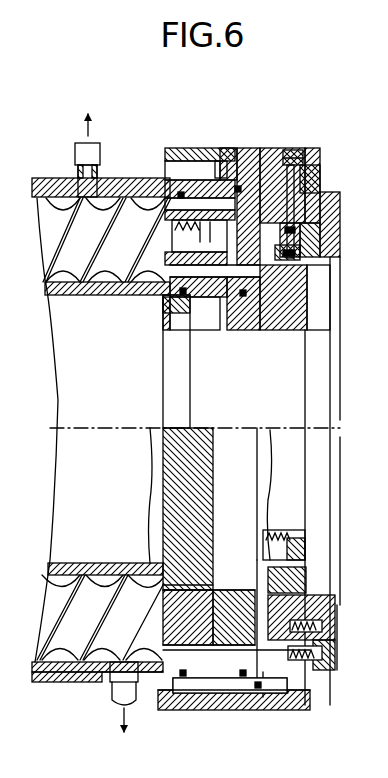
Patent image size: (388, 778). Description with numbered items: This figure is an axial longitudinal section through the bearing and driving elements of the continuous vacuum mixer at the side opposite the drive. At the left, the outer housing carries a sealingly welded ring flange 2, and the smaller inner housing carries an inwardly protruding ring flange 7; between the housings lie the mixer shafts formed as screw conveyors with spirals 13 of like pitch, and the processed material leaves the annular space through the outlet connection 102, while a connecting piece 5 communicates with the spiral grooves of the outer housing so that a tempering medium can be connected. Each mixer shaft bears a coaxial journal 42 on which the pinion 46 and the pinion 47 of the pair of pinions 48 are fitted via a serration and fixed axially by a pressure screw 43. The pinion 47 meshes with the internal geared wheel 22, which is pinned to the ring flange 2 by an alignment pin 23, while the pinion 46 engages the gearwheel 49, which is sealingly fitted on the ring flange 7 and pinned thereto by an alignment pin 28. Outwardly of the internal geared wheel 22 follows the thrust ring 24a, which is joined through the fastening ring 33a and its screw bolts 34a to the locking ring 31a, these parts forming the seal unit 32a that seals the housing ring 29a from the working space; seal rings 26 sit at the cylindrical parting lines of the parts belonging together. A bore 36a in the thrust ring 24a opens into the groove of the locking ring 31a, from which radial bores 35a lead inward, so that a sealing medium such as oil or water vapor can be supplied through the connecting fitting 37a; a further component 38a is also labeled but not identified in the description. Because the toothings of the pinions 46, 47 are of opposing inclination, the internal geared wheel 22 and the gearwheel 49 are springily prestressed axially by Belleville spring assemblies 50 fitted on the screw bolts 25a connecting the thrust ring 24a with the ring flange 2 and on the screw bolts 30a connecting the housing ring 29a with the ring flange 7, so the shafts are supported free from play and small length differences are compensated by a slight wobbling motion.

The ring flange 2 is at (173, 150).
The connecting piece 5 is at (82, 155).
The ring flange 7 is at (176, 333).
The spirals 13 is at (52, 190).
The internal geared wheel 22 is at (222, 185).
The alignment pin 23 is at (183, 168).
The thrust ring 24a is at (292, 150).
The screw bolts 25a is at (255, 692).
The seal rings 26 is at (300, 268).
The alignment pin 28 is at (163, 307).
The housing ring 29a is at (290, 320).
The screw bolts 30a is at (298, 552).
The locking ring 31a is at (315, 233).
The seal unit 32a is at (300, 273).
The fastening ring 33a is at (330, 205).
The screw bolts 34a is at (333, 650).
The radial bores 35a is at (305, 253).
The bore 36a is at (313, 182).
The connecting fitting 37a is at (295, 153).
The valve block 38a is at (333, 622).
The coaxial journal 42 is at (175, 193).
The pressure screw 43 is at (264, 250).
The pinion 46 is at (207, 213).
The pinion 47 is at (238, 182).
The pair of pinions 48 is at (210, 583).
The gearwheel 49 is at (243, 293).
The spring assemblies 50 is at (280, 530).
The outlet connection 102 is at (113, 693).